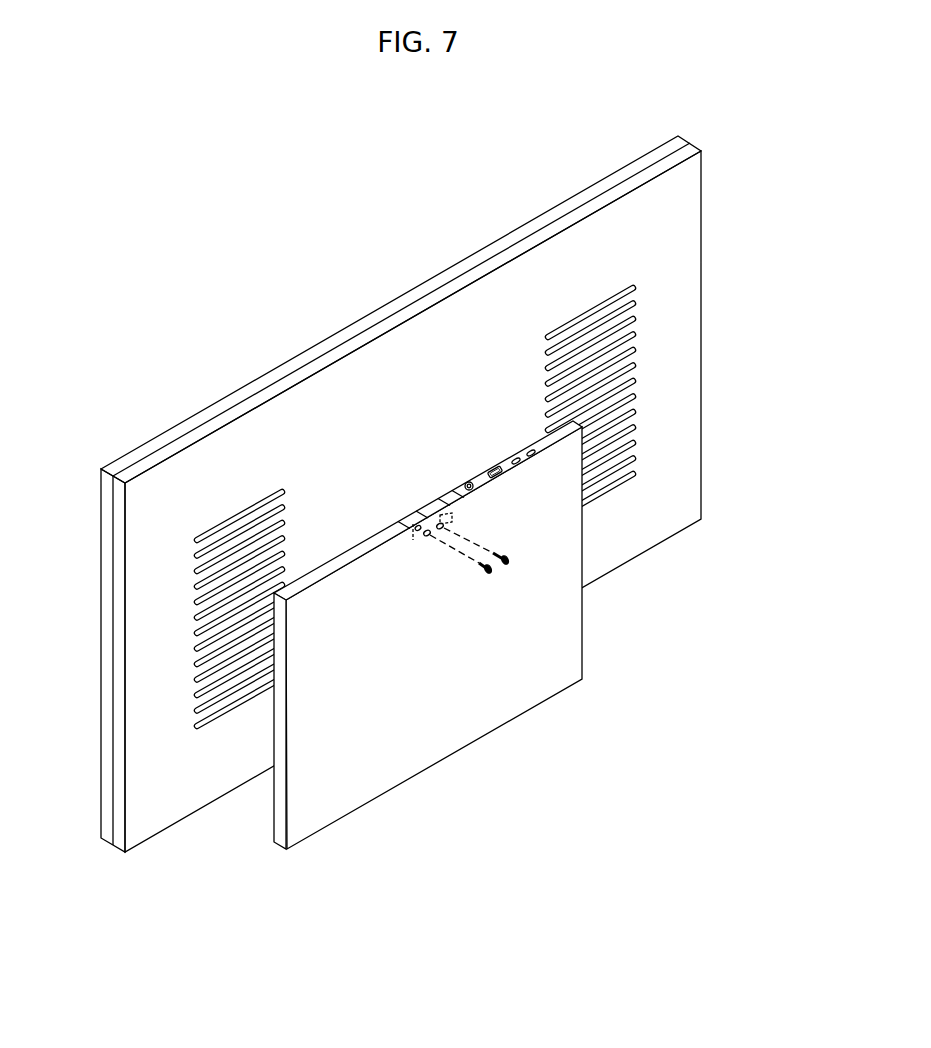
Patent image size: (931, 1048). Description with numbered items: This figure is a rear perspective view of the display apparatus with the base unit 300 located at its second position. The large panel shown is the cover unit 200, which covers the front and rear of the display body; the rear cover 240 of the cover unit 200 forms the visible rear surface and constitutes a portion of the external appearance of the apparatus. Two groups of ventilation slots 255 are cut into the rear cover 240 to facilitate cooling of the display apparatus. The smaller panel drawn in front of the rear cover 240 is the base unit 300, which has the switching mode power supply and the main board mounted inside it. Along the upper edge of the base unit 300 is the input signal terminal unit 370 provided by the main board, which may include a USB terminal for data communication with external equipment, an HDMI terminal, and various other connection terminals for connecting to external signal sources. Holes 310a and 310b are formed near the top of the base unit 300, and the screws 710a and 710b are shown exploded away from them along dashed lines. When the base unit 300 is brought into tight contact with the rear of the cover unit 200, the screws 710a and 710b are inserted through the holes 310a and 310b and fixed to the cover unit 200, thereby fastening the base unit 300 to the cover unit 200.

The cover unit 200 is at (444, 514).
The rear cover 240 is at (163, 807).
The ventilation slots 255 is at (640, 396).
The base unit 300 is at (428, 613).
The hole 310a is at (420, 518).
The hole 310b is at (428, 517).
The input signal terminal unit 370 is at (493, 460).
The screw 710a is at (488, 573).
The screw 710b is at (507, 563).